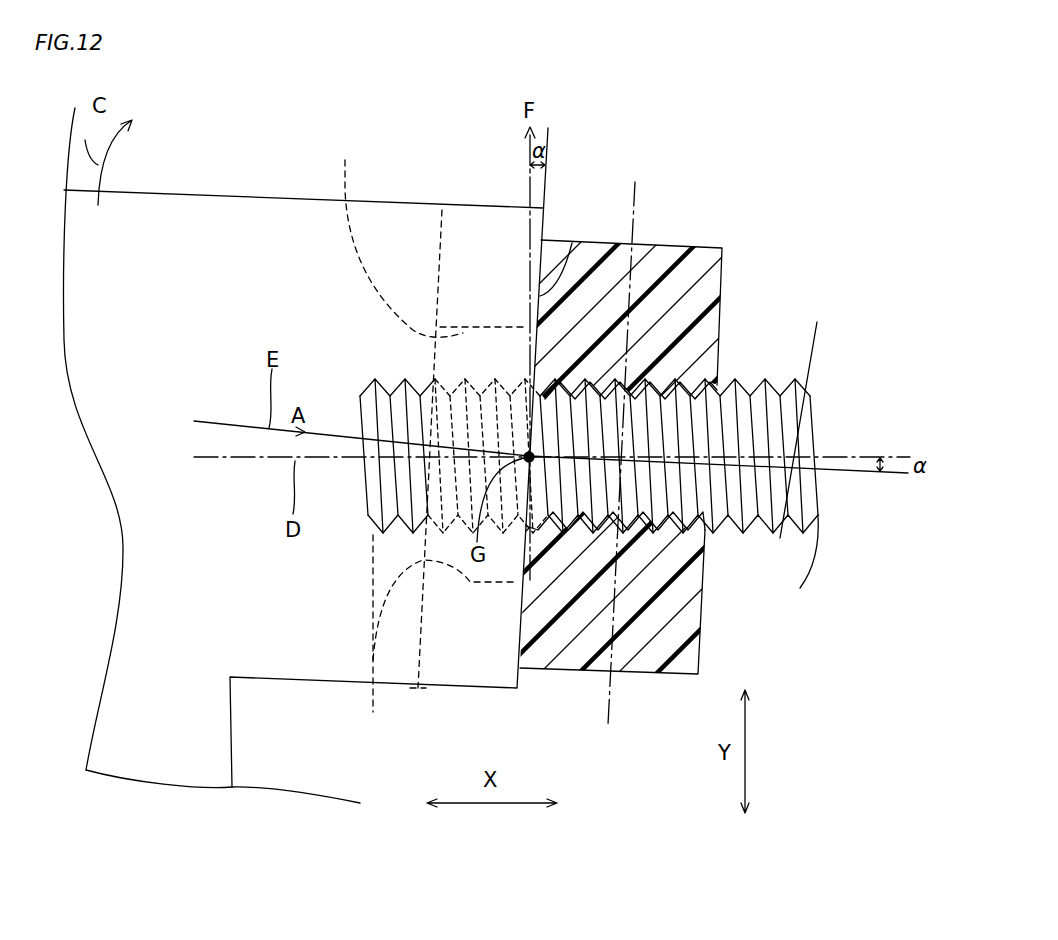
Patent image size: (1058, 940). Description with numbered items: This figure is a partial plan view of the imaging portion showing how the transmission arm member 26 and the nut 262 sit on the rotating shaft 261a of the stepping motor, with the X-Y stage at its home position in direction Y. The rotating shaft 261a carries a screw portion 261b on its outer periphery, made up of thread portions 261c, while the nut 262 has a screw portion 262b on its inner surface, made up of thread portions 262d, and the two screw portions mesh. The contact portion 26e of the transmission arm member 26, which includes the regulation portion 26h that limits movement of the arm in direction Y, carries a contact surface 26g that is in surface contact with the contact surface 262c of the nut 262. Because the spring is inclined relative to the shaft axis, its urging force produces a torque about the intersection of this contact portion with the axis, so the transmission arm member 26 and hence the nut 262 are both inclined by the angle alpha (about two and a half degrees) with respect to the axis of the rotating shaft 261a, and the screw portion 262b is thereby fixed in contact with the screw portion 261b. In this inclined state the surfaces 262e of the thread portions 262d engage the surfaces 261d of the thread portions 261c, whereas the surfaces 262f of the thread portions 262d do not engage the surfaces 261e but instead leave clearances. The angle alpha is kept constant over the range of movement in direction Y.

The transmission arm member 26 is at (207, 194).
The rotating shaft 261a is at (360, 432).
The regulation portion 26h is at (427, 434).
The contact portion 26e is at (468, 283).
The contact surface 262c is at (537, 273).
The contact surface 26g is at (540, 296).
The nut 262 is at (602, 248).
The screw portion 262b is at (648, 442).
The surface 262f is at (677, 376).
The surface 262e is at (721, 386).
The thread portion 262d is at (708, 376).
The screw portion 261b is at (805, 378).
The thread portion 261c is at (767, 378).
The surface 261d is at (675, 397).
The surface 261e is at (787, 442).